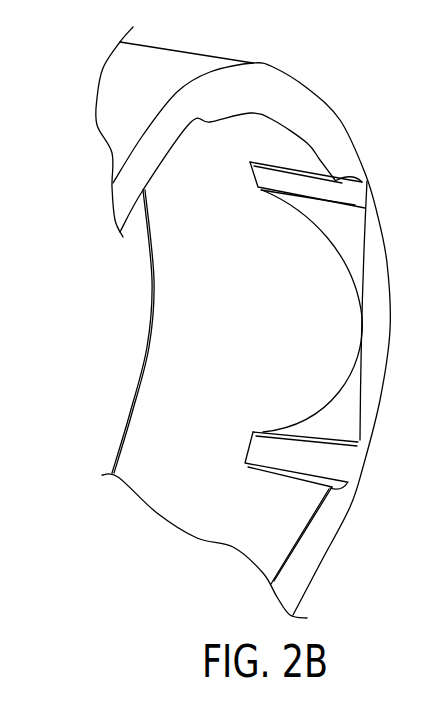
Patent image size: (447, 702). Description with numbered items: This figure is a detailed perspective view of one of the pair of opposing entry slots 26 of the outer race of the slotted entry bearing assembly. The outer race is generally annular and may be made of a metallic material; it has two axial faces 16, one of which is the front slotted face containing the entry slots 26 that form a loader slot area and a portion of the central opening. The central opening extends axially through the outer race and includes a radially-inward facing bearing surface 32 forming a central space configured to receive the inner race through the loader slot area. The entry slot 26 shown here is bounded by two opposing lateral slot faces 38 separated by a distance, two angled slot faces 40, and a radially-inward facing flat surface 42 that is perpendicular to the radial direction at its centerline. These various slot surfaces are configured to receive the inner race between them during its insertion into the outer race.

The axial face 16 is at (303, 92).
The entry slot 26 is at (340, 422).
The radially-inward facing bearing surface 32 is at (168, 340).
The lateral slot face 38 is at (367, 178).
The angled slot face 40 is at (347, 192).
The radially-inward facing flat surface 42 is at (353, 232).